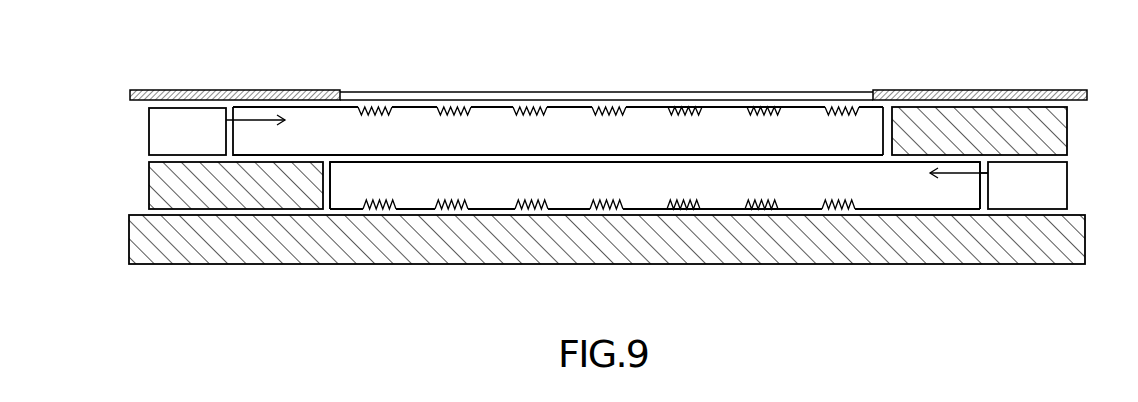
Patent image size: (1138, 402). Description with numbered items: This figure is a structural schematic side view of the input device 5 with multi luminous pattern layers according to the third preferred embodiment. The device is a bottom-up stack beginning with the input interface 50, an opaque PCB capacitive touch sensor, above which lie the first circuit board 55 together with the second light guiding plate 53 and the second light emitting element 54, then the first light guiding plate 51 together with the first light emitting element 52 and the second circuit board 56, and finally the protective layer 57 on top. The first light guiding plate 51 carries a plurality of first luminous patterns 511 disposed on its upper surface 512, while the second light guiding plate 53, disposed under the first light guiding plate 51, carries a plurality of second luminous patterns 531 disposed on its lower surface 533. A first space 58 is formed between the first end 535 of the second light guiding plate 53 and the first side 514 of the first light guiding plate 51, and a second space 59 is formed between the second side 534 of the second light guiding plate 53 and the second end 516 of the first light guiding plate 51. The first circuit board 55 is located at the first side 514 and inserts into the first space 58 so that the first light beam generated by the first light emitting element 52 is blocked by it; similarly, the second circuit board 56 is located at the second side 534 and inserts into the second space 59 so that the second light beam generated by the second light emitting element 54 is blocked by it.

The input device 5 is at (1012, 30).
The input interface 50 is at (872, 253).
The first light guiding plate 51 is at (549, 171).
The first luminous patterns 511 is at (531, 111).
The upper surface 512 is at (721, 108).
The first side 514 is at (287, 142).
The second end 516 is at (883, 145).
The first light emitting element 52 is at (158, 138).
The second light guiding plate 53 is at (676, 232).
The second luminous patterns 531 is at (545, 206).
The lower surface 533 is at (722, 208).
The second side 534 is at (943, 200).
The first end 535 is at (332, 188).
The second light emitting element 54 is at (1057, 190).
The first circuit board 55 is at (158, 180).
The second circuit board 56 is at (1062, 127).
The protective layer 57 is at (372, 85).
The first space 58 is at (327, 184).
The second space 59 is at (882, 107).